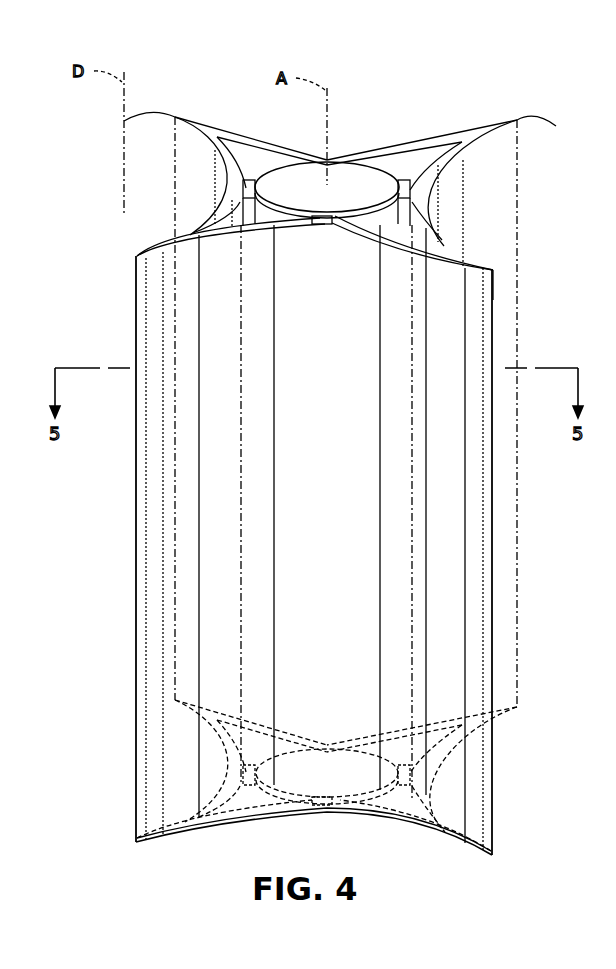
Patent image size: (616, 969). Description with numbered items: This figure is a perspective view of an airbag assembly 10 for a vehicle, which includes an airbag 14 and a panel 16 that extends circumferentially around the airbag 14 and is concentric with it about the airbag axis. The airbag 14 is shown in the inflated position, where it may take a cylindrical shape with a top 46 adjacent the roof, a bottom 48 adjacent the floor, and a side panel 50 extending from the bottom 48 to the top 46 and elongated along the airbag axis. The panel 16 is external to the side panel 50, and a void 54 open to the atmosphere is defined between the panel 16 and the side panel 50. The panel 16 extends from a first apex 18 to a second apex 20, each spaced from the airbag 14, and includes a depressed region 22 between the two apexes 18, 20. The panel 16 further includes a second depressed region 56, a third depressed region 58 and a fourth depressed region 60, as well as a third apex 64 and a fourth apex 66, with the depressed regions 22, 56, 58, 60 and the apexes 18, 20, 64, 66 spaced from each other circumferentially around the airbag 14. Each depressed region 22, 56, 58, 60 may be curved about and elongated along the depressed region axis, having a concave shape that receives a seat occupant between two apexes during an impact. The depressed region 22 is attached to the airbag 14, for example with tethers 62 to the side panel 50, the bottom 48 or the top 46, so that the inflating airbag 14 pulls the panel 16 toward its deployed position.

The airbag assembly 10 is at (256, 126).
The airbag 14 is at (422, 225).
The panel 16 is at (122, 345).
The first apex 18 is at (137, 256).
The second apex 20 is at (124, 121).
The depressed region 22 is at (238, 181).
The top 46 is at (365, 163).
The bottom 48 is at (383, 750).
The side panel 50 is at (253, 210).
The void 54 is at (415, 156).
The second depressed region 56 is at (340, 158).
The third depressed region 58 is at (425, 190).
The fourth depressed region 60 is at (306, 222).
The tethers 62 is at (217, 137).
The third apex 64 is at (556, 126).
The fourth apex 66 is at (493, 270).